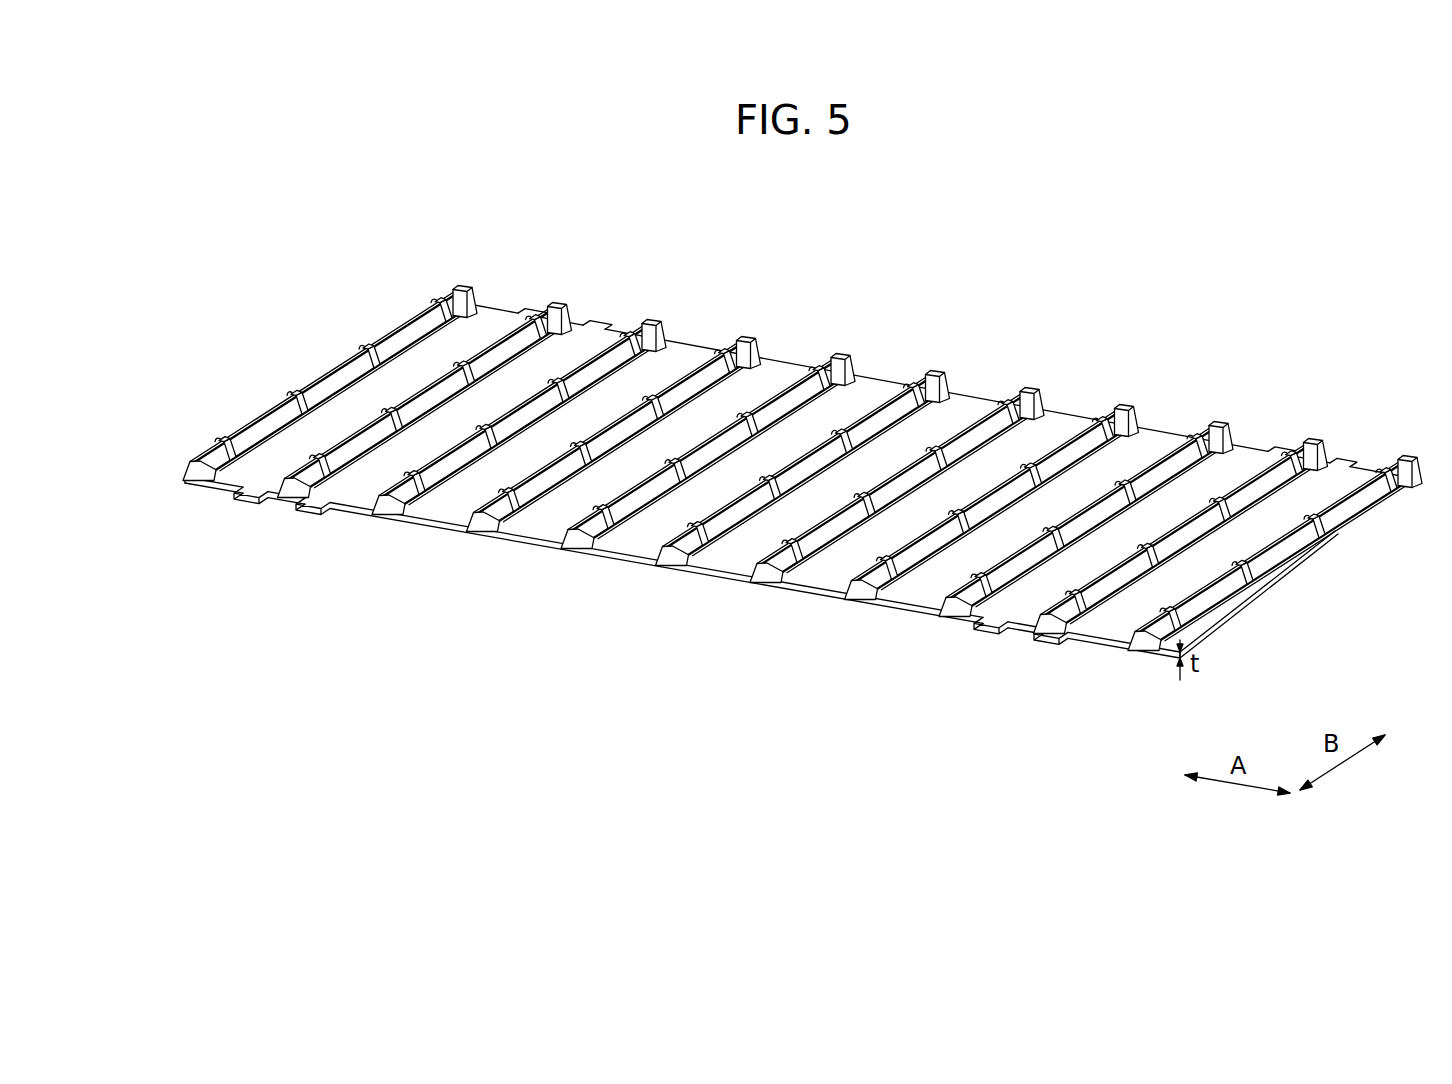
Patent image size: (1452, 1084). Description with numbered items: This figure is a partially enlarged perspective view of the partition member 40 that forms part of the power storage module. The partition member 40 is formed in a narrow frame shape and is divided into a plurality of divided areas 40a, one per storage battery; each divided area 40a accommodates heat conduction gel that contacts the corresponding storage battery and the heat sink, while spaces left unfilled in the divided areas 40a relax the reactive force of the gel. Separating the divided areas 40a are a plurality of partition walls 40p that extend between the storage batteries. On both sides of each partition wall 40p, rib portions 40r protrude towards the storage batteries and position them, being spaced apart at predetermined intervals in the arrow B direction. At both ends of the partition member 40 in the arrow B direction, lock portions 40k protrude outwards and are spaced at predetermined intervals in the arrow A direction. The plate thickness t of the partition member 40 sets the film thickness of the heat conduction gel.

The partition member 40 is at (741, 183).
The divided areas 40a is at (930, 583).
The lock portions 40k is at (530, 308).
The partition walls 40p is at (999, 497).
The rib portions 40r is at (1055, 543).